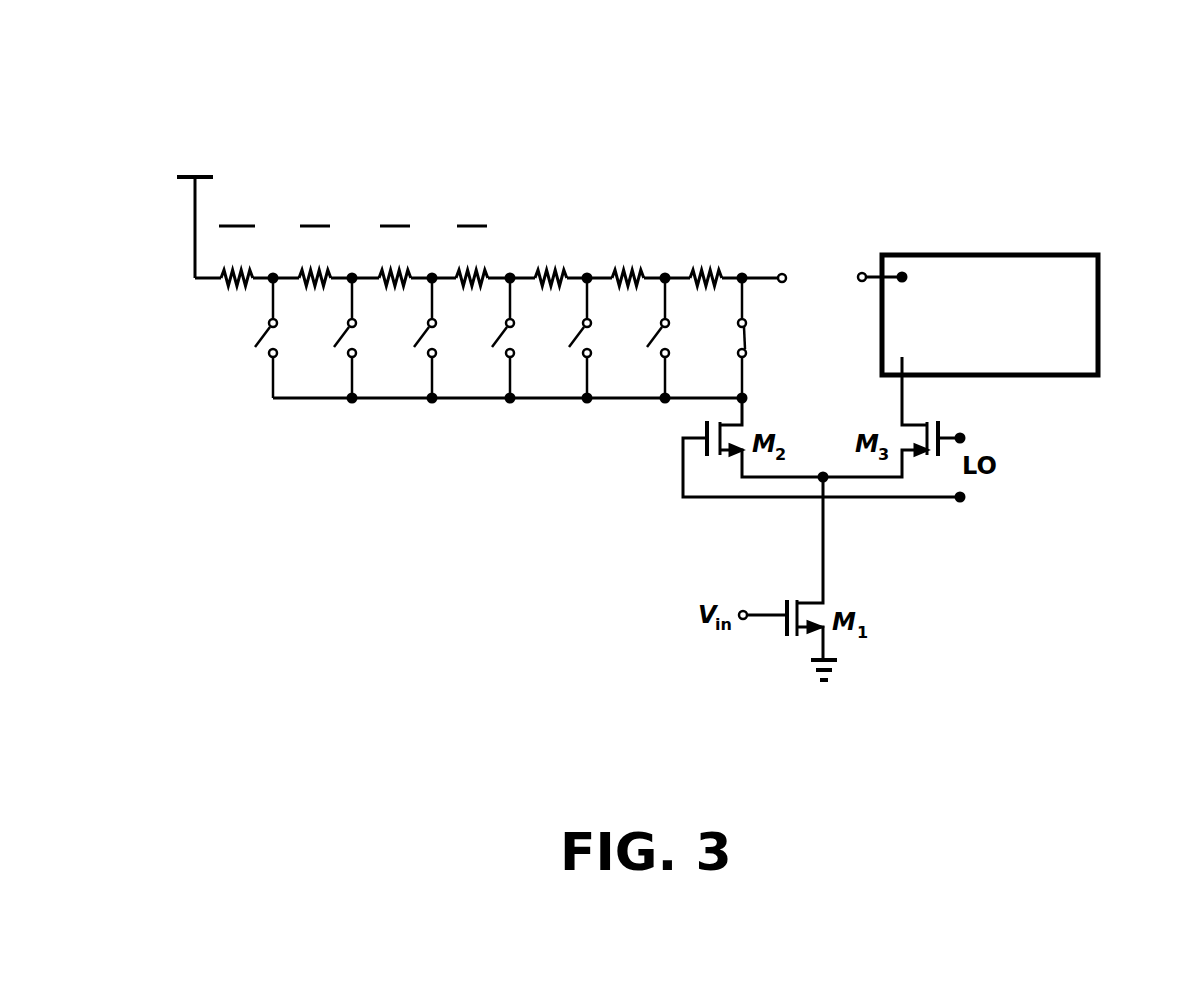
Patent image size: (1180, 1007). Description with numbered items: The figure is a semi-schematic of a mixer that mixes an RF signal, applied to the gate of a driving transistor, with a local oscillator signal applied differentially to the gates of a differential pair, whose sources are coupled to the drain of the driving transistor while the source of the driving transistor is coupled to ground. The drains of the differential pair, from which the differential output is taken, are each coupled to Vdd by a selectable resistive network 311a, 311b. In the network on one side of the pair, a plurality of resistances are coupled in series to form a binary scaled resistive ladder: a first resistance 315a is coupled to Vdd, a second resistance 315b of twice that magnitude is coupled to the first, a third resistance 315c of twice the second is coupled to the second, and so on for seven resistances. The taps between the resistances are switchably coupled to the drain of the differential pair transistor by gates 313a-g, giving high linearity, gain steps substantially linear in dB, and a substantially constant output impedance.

The selectable resistive network 311a is at (538, 125).
The selectable resistive network 311b is at (1022, 252).
The gates 313a-g is at (222, 365).
The first resistance 315a is at (234, 284).
The second resistance 315b is at (310, 292).
The third resistance 315c is at (396, 290).